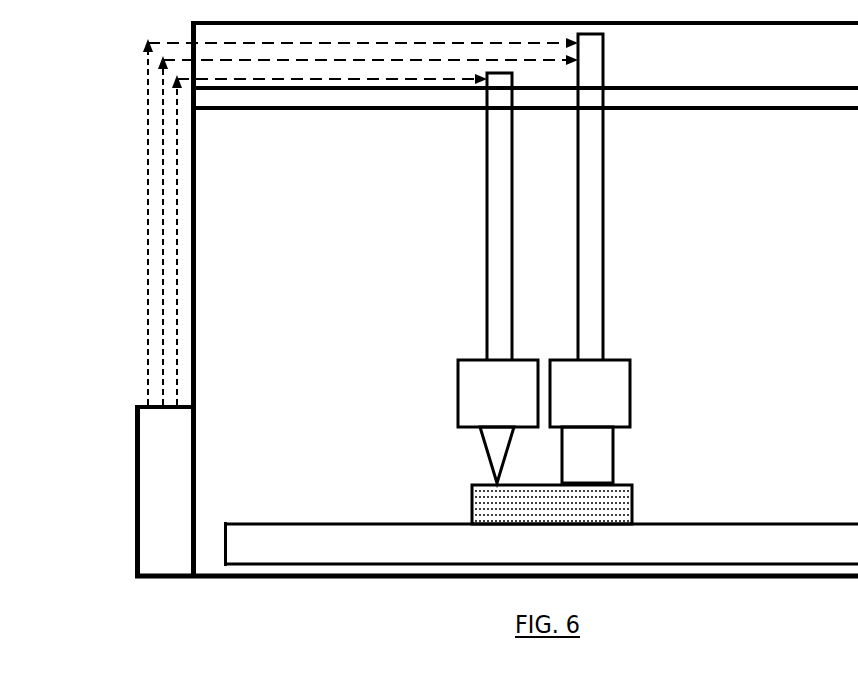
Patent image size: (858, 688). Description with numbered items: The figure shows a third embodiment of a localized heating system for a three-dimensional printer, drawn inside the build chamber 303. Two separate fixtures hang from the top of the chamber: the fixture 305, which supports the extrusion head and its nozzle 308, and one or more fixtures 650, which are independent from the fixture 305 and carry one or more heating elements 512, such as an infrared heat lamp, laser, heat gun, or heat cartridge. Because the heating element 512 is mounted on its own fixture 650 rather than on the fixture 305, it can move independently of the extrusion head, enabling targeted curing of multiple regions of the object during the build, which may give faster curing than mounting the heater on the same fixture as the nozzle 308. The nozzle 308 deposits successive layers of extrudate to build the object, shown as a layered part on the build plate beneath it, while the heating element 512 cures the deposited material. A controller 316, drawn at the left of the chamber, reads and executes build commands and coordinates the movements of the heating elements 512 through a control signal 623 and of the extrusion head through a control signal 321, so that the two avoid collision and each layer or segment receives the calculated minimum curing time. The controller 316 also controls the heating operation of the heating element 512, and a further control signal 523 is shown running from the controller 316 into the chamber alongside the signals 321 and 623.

The build chamber 303 is at (843, 66).
The fixture 305 is at (515, 403).
The nozzle 308 is at (497, 437).
The controller 316 is at (180, 475).
The control signal 321 is at (178, 322).
The heating element 512 is at (598, 460).
The control signal 523 is at (163, 197).
The control signal 623 is at (148, 147).
The fixture 650 is at (607, 403).